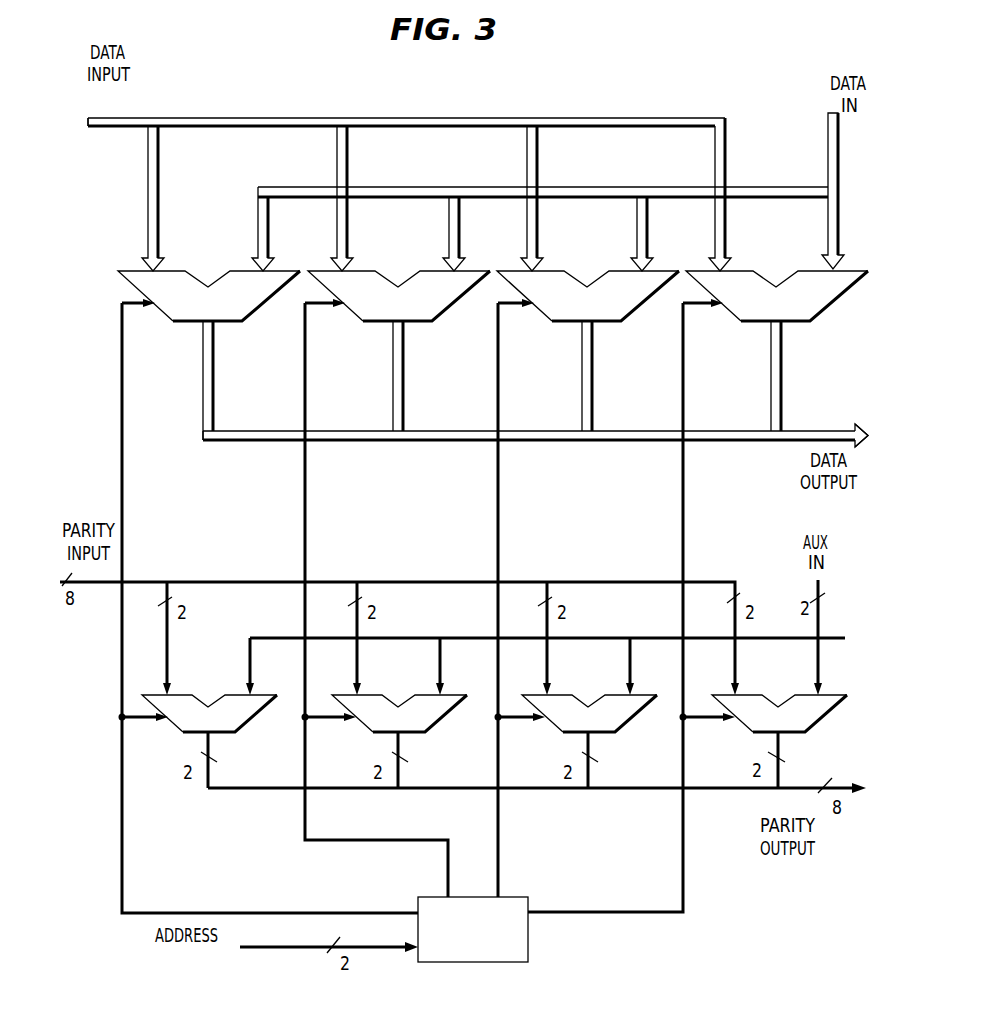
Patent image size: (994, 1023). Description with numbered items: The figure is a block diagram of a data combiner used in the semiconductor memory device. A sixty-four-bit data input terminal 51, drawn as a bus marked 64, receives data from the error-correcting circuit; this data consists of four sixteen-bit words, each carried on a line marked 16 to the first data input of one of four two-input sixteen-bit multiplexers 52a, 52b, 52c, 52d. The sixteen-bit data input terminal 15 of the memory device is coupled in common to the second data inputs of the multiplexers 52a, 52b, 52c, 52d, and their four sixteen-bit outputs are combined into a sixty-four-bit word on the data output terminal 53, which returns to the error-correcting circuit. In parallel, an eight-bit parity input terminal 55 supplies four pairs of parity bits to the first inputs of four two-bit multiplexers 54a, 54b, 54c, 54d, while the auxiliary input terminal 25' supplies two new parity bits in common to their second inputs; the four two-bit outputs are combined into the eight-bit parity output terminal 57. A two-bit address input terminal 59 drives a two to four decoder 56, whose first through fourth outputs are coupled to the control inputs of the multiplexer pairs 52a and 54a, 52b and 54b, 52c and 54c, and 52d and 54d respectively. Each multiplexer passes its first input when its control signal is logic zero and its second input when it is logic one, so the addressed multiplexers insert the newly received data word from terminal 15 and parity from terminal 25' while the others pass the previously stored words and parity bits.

The data input/output bus 64 is at (122, 115).
The data input terminal 51 is at (92, 129).
The data input terminal 15 is at (828, 114).
The 16-bit lines 16 is at (160, 205).
The 16-bit multiplexer 52a is at (157, 305).
The 16-bit multiplexer 52b is at (347, 305).
The 16-bit multiplexer 52c is at (536, 305).
The 16-bit multiplexer 52d is at (725, 305).
The data output terminal 53 is at (861, 429).
The parity input terminal 55 is at (92, 586).
The auxiliary input terminal 25' is at (570, 619).
The two-bit multiplexer 54a is at (247, 720).
The two-bit multiplexer 54b is at (437, 720).
The two-bit multiplexer 54c is at (627, 720).
The two-bit multiplexer 54d is at (817, 720).
The parity output terminal 57 is at (855, 789).
The 2 to 4 decoder 56 is at (528, 935).
The address input terminal 59 is at (255, 948).